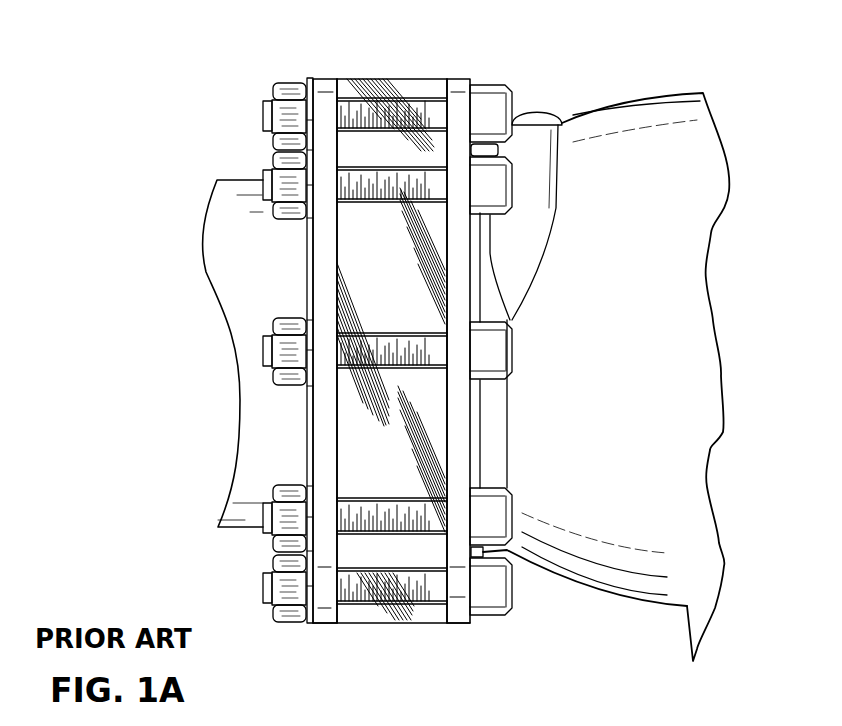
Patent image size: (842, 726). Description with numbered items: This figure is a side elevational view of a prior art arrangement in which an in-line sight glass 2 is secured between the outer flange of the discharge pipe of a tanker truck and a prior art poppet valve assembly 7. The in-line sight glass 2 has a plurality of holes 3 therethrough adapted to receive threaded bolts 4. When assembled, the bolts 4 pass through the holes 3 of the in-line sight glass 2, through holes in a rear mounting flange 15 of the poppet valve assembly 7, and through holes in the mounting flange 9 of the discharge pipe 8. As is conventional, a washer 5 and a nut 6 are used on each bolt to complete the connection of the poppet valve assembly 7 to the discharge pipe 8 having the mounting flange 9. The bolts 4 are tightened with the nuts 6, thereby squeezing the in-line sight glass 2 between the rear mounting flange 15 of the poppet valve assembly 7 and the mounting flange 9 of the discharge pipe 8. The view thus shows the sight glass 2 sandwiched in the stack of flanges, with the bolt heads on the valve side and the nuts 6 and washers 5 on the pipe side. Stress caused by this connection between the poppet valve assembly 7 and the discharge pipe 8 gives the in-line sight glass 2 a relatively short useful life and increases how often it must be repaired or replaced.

The in-line sight glass 2 is at (415, 624).
The holes 3 is at (433, 98).
The threaded bolts 4 is at (515, 98).
The washer 5 is at (308, 77).
The nut 6 is at (272, 89).
The poppet valve assembly 7 is at (656, 371).
The discharge pipe 8 is at (244, 284).
The mounting flange 9 is at (323, 78).
The rear mounting flange 15 is at (458, 77).